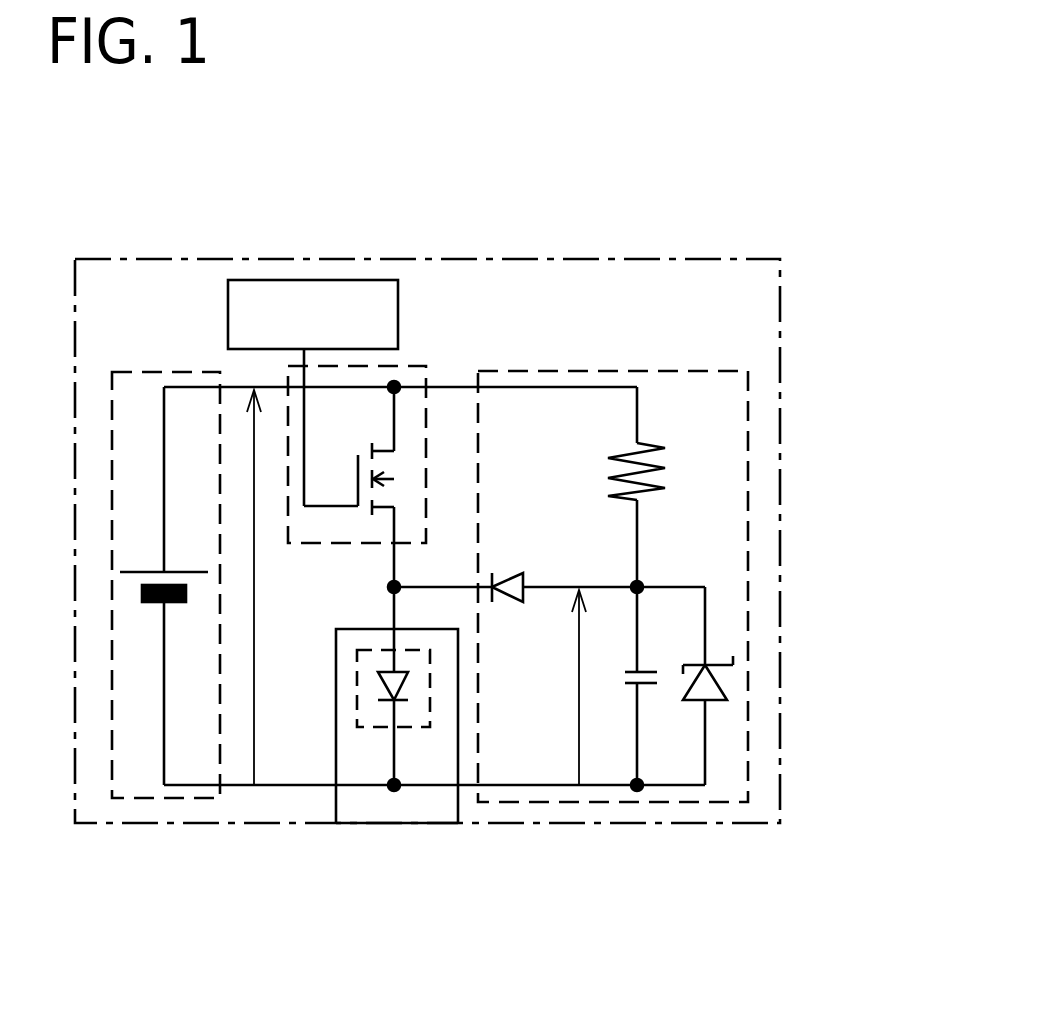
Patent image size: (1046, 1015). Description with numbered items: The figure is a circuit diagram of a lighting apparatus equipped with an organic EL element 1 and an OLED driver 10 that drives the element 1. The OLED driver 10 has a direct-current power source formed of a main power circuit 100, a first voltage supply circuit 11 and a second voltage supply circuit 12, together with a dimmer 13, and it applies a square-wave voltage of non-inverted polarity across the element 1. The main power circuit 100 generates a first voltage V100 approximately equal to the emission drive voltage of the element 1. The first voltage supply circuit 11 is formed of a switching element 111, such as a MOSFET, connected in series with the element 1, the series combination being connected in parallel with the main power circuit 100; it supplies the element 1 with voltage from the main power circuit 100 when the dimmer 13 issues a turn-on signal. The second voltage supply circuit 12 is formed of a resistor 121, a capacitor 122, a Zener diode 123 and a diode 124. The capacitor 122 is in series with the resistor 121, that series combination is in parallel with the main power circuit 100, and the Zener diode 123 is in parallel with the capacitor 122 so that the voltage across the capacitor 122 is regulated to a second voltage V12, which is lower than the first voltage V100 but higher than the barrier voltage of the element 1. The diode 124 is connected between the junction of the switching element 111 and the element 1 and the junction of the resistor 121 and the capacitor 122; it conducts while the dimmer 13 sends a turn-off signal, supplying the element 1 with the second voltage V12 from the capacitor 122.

The organic EL element 1 is at (382, 718).
The OLED driver 10 is at (613, 258).
The first voltage supply circuit 11 is at (430, 409).
The second voltage supply circuit 12 is at (637, 371).
The dimmer 13 is at (312, 296).
The main power circuit 100 is at (142, 800).
The switching element 111 is at (402, 470).
The resistor 121 is at (693, 438).
The capacitor 122 is at (650, 662).
The Zener diode 123 is at (725, 683).
The diode 124 is at (513, 572).
The first voltage V100 is at (302, 587).
The second voltage V12 is at (544, 687).